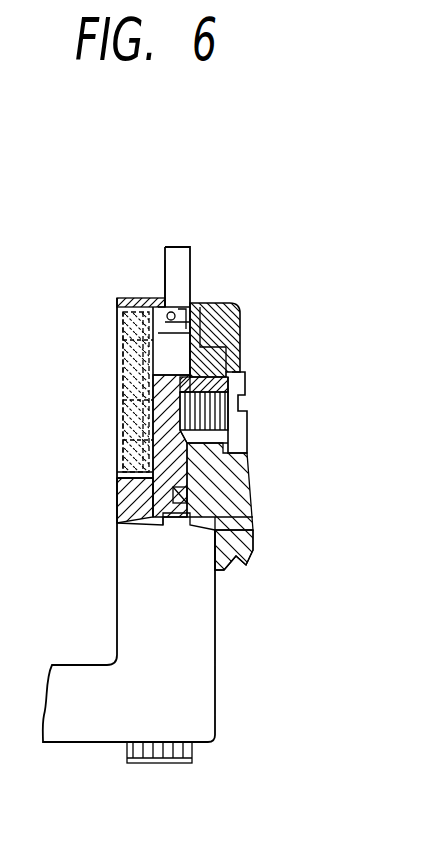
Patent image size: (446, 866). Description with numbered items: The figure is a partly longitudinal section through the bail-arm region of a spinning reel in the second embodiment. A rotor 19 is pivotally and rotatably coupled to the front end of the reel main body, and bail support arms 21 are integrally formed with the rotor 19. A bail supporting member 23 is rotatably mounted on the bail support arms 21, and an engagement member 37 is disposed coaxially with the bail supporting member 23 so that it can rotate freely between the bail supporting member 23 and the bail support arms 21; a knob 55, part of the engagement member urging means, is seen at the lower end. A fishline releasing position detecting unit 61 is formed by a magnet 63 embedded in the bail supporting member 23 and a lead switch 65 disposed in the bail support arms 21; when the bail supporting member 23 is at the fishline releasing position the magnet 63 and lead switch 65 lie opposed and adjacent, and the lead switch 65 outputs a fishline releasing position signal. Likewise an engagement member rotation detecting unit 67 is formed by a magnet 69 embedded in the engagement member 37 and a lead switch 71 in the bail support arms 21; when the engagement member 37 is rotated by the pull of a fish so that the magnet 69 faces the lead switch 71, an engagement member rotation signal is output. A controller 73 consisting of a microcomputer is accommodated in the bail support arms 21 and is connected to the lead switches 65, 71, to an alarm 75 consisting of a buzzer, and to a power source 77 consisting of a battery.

The rotor 19 is at (80, 680).
The bail support arms 21 is at (117, 507).
The bail supporting member 23 is at (226, 333).
The engagement member 37 is at (165, 282).
The knob 55 is at (164, 760).
The fishline releasing position detecting unit 61 is at (205, 322).
The magnet 63 is at (231, 372).
The lead switch 65 is at (247, 397).
The engagement member rotation detecting unit 67 is at (165, 253).
The magnet 69 is at (172, 298).
The lead switch 71 is at (117, 315).
The controller 73 is at (113, 375).
The alarm 75 is at (117, 472).
The power source 77 is at (117, 427).